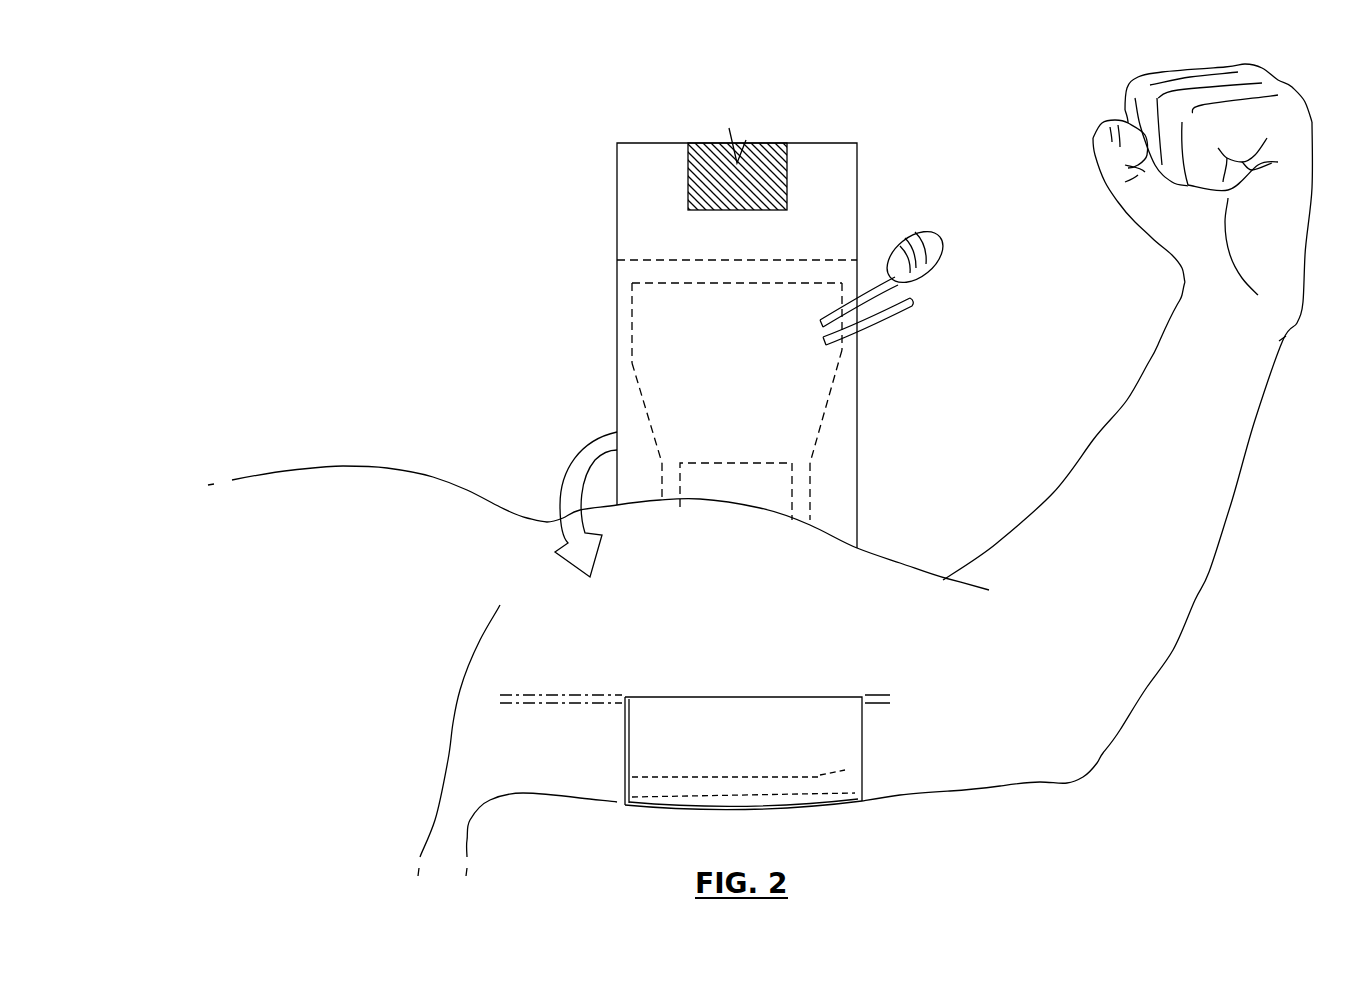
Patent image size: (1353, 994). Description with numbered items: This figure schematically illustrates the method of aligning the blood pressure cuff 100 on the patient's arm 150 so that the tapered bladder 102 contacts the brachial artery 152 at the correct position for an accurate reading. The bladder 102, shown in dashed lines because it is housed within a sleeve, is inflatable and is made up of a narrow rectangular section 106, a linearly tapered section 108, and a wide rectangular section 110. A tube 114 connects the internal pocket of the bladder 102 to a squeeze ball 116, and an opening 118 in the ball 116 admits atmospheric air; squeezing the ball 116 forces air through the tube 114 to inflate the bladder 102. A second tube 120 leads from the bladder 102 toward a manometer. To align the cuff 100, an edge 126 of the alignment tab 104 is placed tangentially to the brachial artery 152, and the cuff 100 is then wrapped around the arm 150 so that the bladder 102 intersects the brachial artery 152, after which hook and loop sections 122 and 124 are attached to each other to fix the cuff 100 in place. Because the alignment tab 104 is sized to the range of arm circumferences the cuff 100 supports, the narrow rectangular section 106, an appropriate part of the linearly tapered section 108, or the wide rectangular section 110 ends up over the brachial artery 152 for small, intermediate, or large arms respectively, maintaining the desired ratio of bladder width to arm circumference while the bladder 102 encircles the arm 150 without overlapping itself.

The blood pressure cuff 100 is at (576, 205).
The tapered bladder 102 is at (655, 340).
The alignment tab 104 is at (835, 749).
The narrow rectangular section 106 is at (800, 505).
The linearly tapered section 108 is at (802, 430).
The wide rectangular section 110 is at (823, 368).
The tube 114 is at (893, 277).
The squeeze ball 116 is at (938, 252).
The opening 118 is at (937, 237).
The second tube 120 is at (907, 297).
The hook and loop section 122 is at (693, 472).
The hook and loop section 124 is at (800, 182).
The edge of tab 126 is at (702, 697).
The patient's arm 150 is at (565, 591).
The brachial artery 152 is at (577, 712).